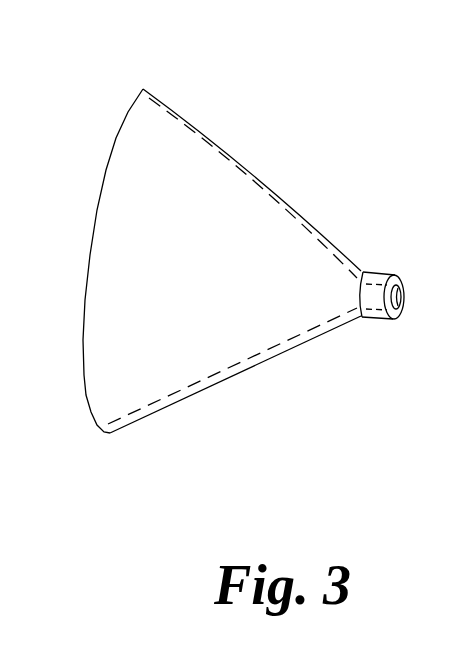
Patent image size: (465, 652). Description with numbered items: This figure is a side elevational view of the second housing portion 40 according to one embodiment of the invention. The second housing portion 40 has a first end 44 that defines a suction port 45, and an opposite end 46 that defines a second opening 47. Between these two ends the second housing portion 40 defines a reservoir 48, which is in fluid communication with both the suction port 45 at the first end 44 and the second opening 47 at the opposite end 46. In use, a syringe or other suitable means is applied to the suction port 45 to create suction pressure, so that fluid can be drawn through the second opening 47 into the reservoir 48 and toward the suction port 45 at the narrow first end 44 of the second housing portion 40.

The second housing portion 40 is at (226, 242).
The first end 44 is at (364, 272).
The suction port 45 is at (382, 319).
The opposite end 46 is at (143, 89).
The second opening 47 is at (88, 392).
The reservoir 48 is at (208, 214).